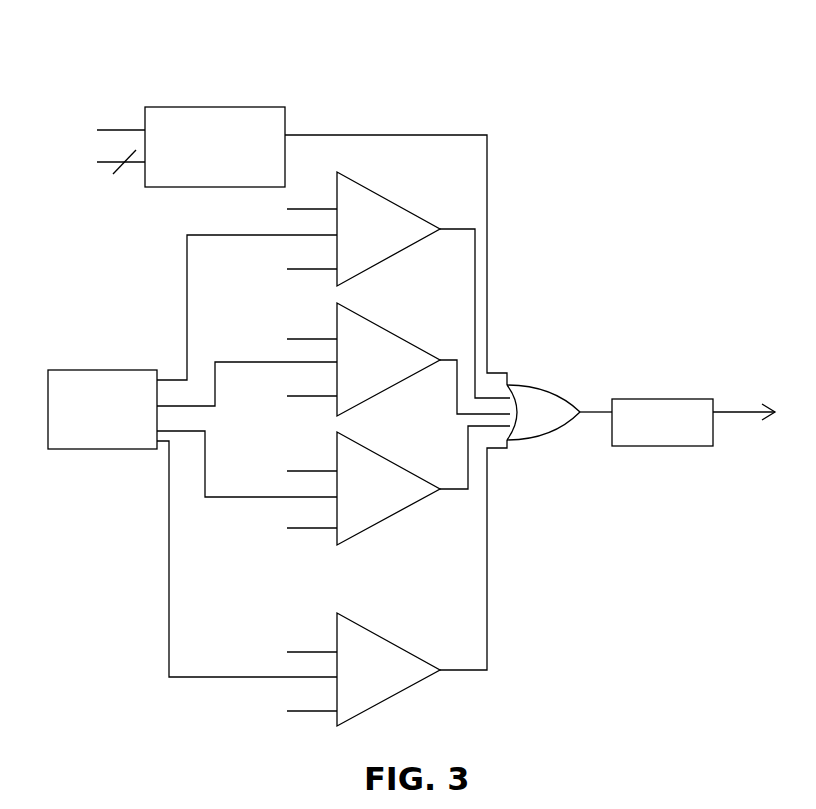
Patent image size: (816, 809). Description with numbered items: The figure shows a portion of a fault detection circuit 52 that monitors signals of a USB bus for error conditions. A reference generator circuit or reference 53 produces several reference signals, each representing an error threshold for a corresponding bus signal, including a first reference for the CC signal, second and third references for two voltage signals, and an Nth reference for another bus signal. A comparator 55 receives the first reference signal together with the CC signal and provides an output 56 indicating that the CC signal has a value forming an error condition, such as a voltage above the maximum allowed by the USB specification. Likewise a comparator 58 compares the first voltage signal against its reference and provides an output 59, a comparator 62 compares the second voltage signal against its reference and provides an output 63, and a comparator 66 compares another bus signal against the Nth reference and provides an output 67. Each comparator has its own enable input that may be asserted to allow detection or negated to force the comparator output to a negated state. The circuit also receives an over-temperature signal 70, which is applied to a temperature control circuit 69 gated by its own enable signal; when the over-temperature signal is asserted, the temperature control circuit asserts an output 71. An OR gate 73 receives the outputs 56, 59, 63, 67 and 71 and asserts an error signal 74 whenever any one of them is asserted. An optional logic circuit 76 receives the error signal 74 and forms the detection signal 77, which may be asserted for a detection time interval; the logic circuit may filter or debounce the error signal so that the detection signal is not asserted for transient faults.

The fault detection circuit 52 is at (40, 62).
The reference generator circuit 53 is at (72, 452).
The comparator 55 is at (373, 196).
The output 56 is at (446, 232).
The comparator 58 is at (398, 331).
The output 59 is at (452, 380).
The comparator 62 is at (398, 463).
The output 63 is at (452, 492).
The comparator 66 is at (398, 641).
The output 67 is at (452, 673).
The temperature control circuit 69 is at (233, 107).
The over-temperature signal 70 is at (118, 165).
The output 71 is at (324, 135).
The OR gate 73 is at (541, 387).
The error signal 74 is at (580, 415).
The logic circuit 76 is at (643, 447).
The detection signal 77 is at (731, 418).